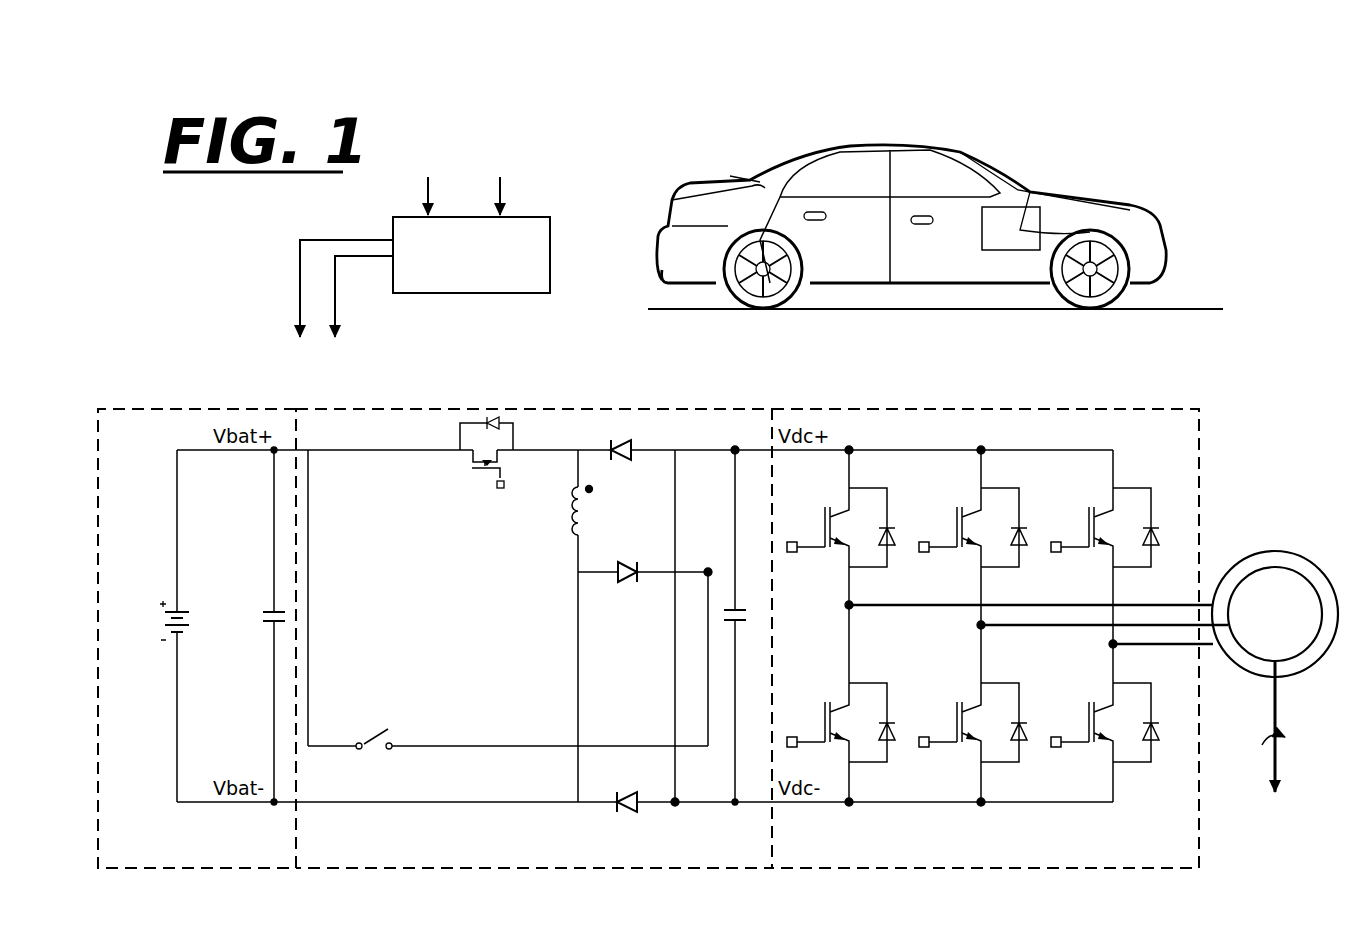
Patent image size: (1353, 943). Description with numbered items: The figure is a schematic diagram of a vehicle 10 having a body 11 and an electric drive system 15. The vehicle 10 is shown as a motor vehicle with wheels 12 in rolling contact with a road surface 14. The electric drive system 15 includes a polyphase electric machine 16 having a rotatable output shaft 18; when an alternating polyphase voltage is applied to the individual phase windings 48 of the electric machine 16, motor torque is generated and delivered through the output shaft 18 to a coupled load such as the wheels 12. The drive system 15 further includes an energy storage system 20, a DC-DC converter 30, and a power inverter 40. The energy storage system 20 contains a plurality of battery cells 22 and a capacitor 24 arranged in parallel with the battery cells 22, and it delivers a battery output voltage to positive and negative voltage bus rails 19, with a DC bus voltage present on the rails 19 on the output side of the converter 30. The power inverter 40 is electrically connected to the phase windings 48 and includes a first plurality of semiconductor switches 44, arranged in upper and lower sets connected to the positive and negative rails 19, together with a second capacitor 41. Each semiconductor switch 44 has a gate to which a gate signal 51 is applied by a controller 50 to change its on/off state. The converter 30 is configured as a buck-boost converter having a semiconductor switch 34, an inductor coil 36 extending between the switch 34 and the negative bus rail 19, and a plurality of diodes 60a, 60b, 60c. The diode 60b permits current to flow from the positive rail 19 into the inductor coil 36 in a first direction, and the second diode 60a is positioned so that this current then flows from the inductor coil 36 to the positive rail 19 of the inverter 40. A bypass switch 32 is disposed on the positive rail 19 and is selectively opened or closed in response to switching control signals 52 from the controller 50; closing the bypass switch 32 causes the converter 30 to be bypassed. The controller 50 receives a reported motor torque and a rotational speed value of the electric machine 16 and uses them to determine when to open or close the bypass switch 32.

The vehicle 10 is at (911, 180).
The body 11 is at (960, 152).
The wheels 12 is at (1062, 312).
The road surface 14 is at (1176, 308).
The electric drive system 15 is at (1022, 240).
The polyphase electric machine 16 is at (1275, 614).
The rotatable output shaft 18 is at (1278, 716).
The voltage bus rails 19 is at (316, 450).
The energy storage system 20 is at (142, 409).
The battery cells 22 is at (161, 652).
The capacitor 24 is at (262, 632).
The DC-DC converter 30 is at (637, 409).
The bypass switch 32 is at (383, 698).
The semiconductor switch 34 is at (465, 479).
The inductor coil 36 is at (569, 530).
The power inverter 40 is at (1080, 409).
The second capacitor 41 is at (741, 604).
The semiconductor switches 44 is at (1073, 498).
The phase windings 48 is at (1148, 605).
The controller 50 is at (484, 269).
The gate signal 51 is at (330, 288).
The switching control signals 52 is at (364, 296).
The second diode 60a is at (631, 470).
The diode 60b is at (629, 592).
The diode 60c is at (625, 822).